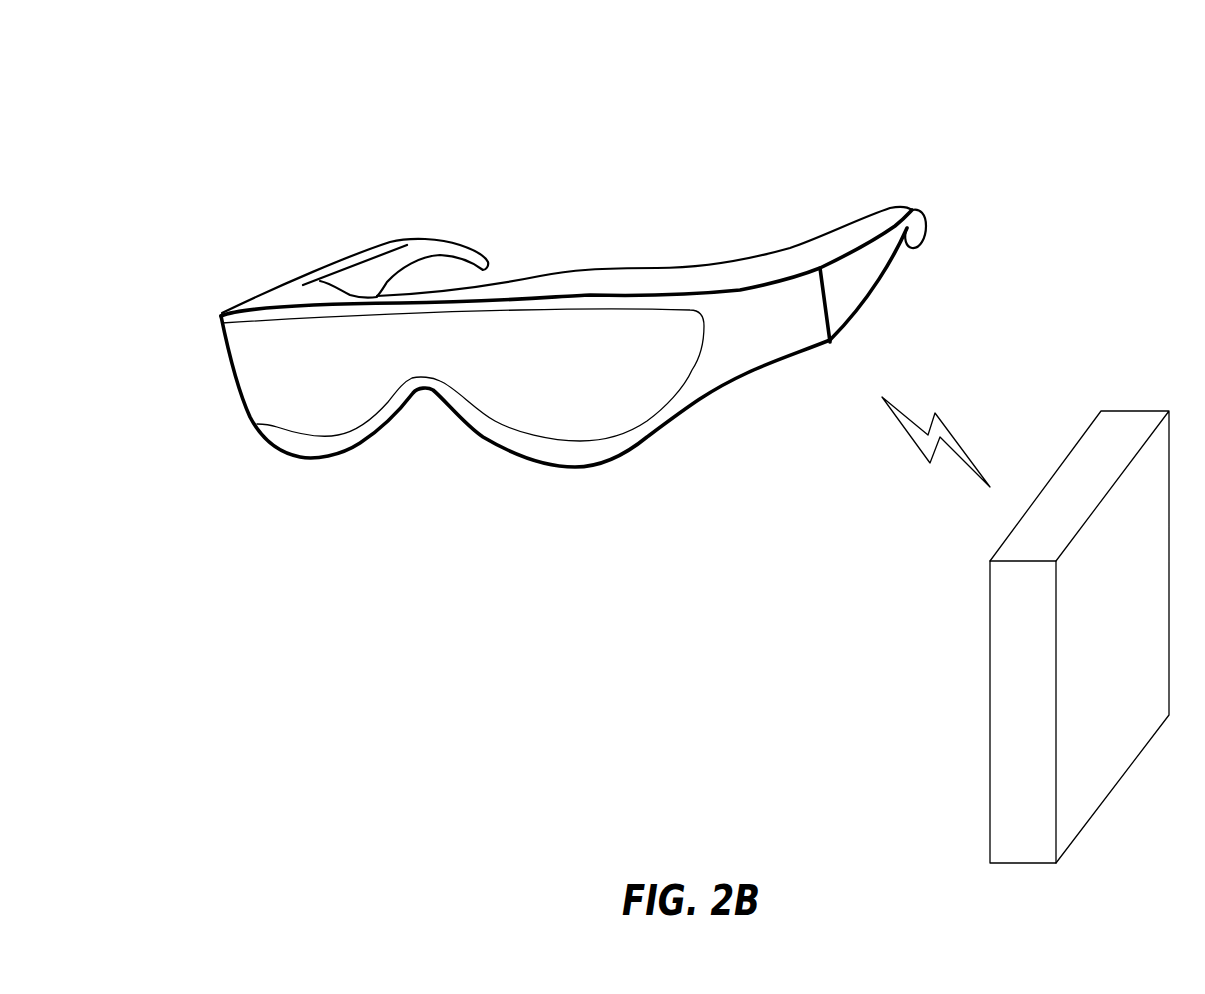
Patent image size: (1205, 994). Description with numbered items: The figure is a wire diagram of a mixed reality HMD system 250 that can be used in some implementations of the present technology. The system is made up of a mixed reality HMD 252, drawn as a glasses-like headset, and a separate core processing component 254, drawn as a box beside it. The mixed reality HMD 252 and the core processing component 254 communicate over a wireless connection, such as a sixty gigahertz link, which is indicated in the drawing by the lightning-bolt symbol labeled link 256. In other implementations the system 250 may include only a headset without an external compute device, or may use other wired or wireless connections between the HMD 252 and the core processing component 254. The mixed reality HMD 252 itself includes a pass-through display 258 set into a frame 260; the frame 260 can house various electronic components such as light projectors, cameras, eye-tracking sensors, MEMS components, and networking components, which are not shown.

The mixed reality HMD system 250 is at (180, 123).
The mixed reality HMD 252 is at (221, 322).
The core processing component 254 is at (990, 632).
The link 256 is at (923, 456).
The pass-through display 258 is at (705, 313).
The frame 260 is at (855, 280).